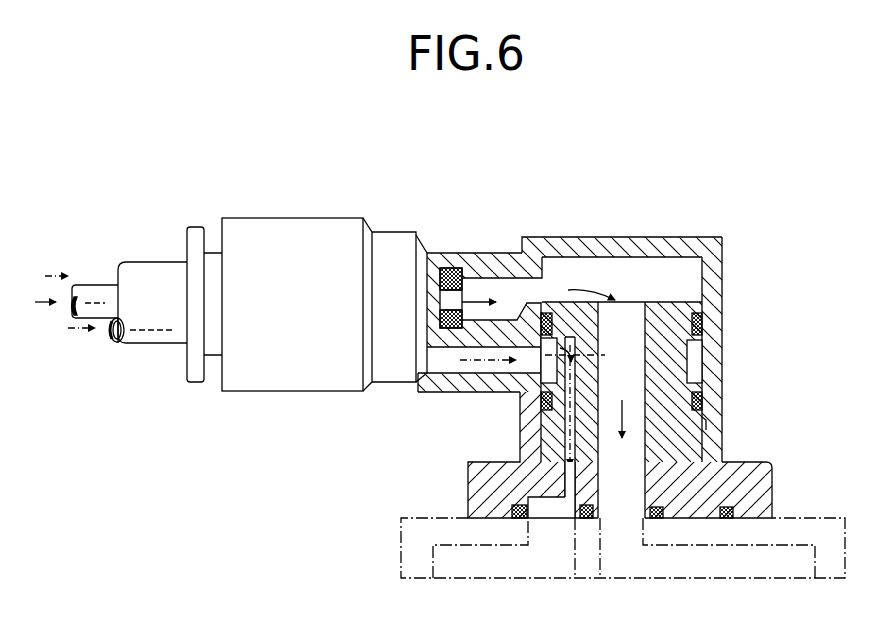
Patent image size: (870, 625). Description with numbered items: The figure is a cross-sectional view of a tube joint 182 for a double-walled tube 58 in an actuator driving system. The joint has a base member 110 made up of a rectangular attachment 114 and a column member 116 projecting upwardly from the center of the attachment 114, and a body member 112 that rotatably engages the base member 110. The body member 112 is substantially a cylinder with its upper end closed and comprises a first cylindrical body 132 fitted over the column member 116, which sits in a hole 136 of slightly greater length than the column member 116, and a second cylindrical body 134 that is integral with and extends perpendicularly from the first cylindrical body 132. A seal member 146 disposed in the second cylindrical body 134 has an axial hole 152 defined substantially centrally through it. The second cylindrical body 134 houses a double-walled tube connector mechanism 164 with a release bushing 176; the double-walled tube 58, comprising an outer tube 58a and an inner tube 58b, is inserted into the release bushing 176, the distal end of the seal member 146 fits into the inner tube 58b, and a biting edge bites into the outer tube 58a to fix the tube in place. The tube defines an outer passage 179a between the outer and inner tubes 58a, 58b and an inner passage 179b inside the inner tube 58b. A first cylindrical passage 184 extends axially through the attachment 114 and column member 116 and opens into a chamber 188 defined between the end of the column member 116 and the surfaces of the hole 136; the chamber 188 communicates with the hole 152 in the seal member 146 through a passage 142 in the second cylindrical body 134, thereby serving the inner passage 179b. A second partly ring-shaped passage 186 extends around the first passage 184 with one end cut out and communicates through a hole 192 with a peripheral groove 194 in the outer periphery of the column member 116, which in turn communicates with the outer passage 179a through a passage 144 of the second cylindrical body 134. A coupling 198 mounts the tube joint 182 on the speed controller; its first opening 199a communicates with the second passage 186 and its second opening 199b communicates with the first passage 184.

The double-walled tube 58 is at (166, 347).
The outer tube 58a is at (142, 332).
The inner tube 58b is at (103, 292).
The outer passage 179a is at (112, 330).
The inner passage 179b is at (68, 302).
The double-walled tube connector mechanism 164 is at (189, 218).
The release bushing 176 is at (200, 368).
The second cylindrical body 134 is at (333, 245).
The seal member 146 is at (448, 260).
The passage 142 is at (497, 283).
The passage 144 is at (495, 368).
The axial hole 152 is at (438, 335).
The first cylindrical body 132 is at (568, 240).
The body member 112 is at (728, 266).
The hole 136 is at (703, 286).
The chamber 188 is at (673, 268).
The tube joint 182 is at (655, 178).
The hole 192 is at (639, 369).
The peripheral groove 194 is at (700, 362).
The column member 116 is at (697, 432).
The base member 110 is at (760, 460).
The attachment 114 is at (765, 495).
The first cylindrical passage 184 is at (625, 500).
The second partly ring-shaped passage 186 is at (567, 497).
The coupling 198 is at (413, 568).
The first opening 199a is at (462, 565).
The second opening 199b is at (692, 565).